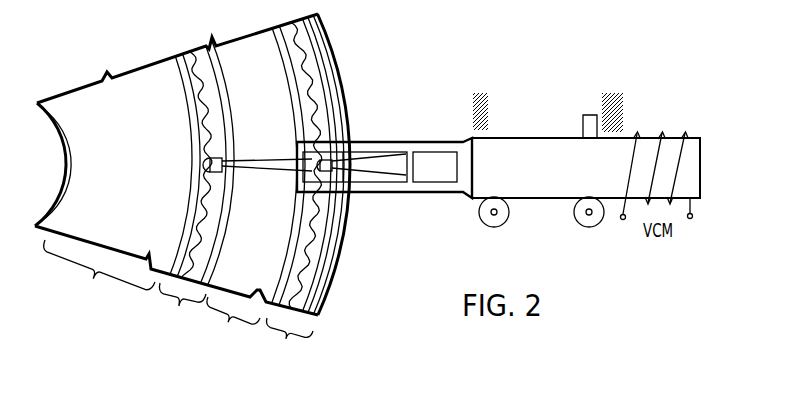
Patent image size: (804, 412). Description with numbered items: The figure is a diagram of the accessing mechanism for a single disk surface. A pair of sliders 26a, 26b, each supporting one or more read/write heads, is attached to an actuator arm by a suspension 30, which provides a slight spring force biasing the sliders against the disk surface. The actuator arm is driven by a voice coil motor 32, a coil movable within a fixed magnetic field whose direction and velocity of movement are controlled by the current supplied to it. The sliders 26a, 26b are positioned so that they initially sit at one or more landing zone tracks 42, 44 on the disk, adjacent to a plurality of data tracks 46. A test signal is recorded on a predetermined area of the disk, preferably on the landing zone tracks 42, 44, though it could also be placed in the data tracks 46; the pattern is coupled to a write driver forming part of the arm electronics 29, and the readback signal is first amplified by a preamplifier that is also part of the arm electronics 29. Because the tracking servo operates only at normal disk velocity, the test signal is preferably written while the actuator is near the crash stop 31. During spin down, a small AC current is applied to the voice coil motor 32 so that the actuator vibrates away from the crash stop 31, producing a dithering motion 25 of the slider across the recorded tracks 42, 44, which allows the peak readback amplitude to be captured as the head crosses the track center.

The dithering motion 25 is at (313, 88).
The slider 26a is at (311, 174).
The slider 26b is at (206, 168).
The arm electronics 29 is at (438, 167).
The suspension 30 is at (383, 168).
The crash stop 31 is at (636, 100).
The voice coil motor 32 is at (663, 133).
The landing zone track 42 is at (287, 340).
The landing zone track 44 is at (179, 306).
The data tracks 46 is at (229, 323).